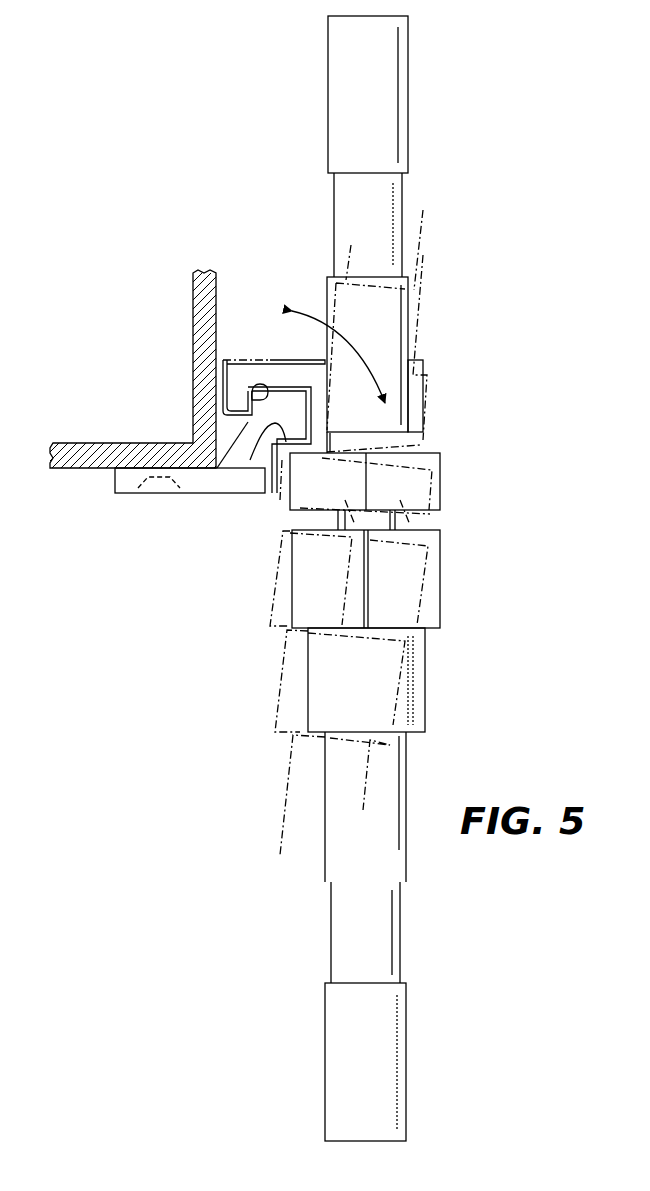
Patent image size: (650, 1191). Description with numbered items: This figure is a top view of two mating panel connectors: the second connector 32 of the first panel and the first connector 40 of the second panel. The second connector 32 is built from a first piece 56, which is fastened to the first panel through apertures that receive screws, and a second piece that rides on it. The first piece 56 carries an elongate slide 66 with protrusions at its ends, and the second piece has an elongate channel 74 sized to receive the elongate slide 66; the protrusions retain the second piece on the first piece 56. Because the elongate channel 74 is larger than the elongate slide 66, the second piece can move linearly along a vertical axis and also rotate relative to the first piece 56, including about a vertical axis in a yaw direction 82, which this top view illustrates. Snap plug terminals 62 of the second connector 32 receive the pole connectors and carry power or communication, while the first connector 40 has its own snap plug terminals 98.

The second connector 32 is at (162, 288).
The first piece 56 is at (115, 482).
The elongate channel 74 is at (270, 387).
The elongate slide 66 is at (250, 460).
The snap plug terminal 62 is at (385, 105).
The yaw direction 82 is at (320, 312).
The first connector 40 is at (216, 622).
The snap plug terminal 98 is at (383, 1053).